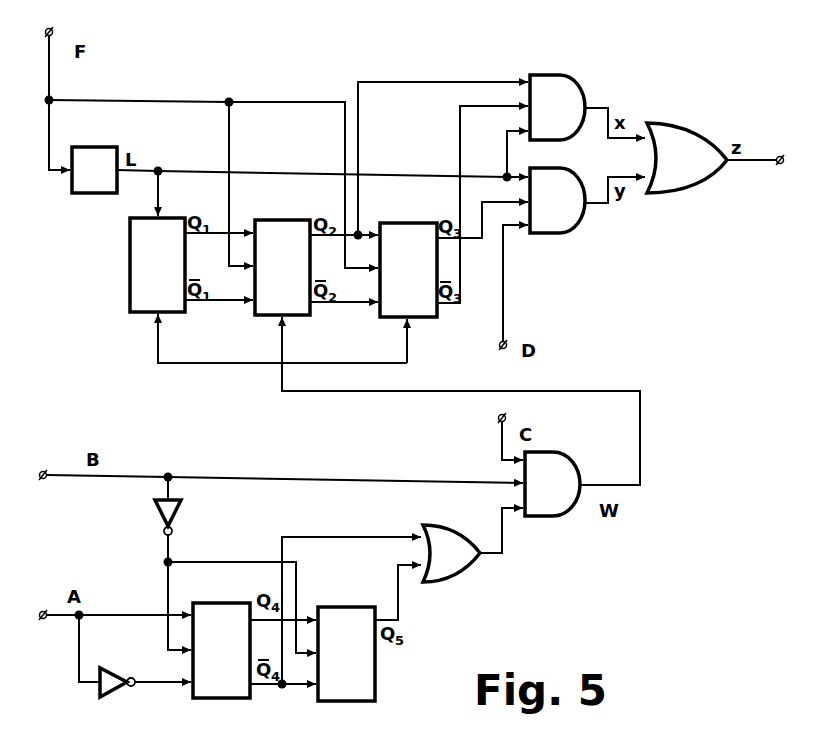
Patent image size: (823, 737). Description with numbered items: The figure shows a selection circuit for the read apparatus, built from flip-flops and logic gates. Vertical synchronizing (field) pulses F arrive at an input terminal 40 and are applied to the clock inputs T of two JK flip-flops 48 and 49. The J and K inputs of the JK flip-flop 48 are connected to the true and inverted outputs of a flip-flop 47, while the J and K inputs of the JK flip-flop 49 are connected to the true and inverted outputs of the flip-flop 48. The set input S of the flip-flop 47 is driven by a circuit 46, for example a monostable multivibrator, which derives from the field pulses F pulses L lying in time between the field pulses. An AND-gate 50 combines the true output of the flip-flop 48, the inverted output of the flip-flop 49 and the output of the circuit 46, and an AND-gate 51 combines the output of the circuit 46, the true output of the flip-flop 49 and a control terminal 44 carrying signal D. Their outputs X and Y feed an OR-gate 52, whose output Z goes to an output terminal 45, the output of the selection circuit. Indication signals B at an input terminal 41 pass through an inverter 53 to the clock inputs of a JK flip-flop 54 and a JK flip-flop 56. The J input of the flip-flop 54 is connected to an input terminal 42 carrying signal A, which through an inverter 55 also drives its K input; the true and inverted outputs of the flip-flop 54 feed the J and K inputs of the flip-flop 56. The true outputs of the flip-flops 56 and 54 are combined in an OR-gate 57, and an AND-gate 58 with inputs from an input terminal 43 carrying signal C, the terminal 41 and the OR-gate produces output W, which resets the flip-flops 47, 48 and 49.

The input terminal 40 is at (53, 32).
The input terminal 41 is at (84, 461).
The input terminal 42 is at (74, 600).
The input terminal 43 is at (518, 432).
The control terminal 44 is at (520, 349).
The output terminal 45 is at (780, 165).
The circuit 46 is at (94, 195).
The flip-flop 47 is at (145, 313).
The JK flip-flop 48 is at (268, 318).
The JK flip-flop 49 is at (389, 319).
The AND-gate 50 is at (584, 82).
The AND-gate 51 is at (584, 222).
The OR-gate 52 is at (705, 134).
The inverter 53 is at (156, 512).
The JK flip-flop 54 is at (222, 700).
The inverter 55 is at (112, 697).
The JK flip-flop 56 is at (345, 703).
The OR-gate 57 is at (440, 580).
The AND-gate 58 is at (600, 487).